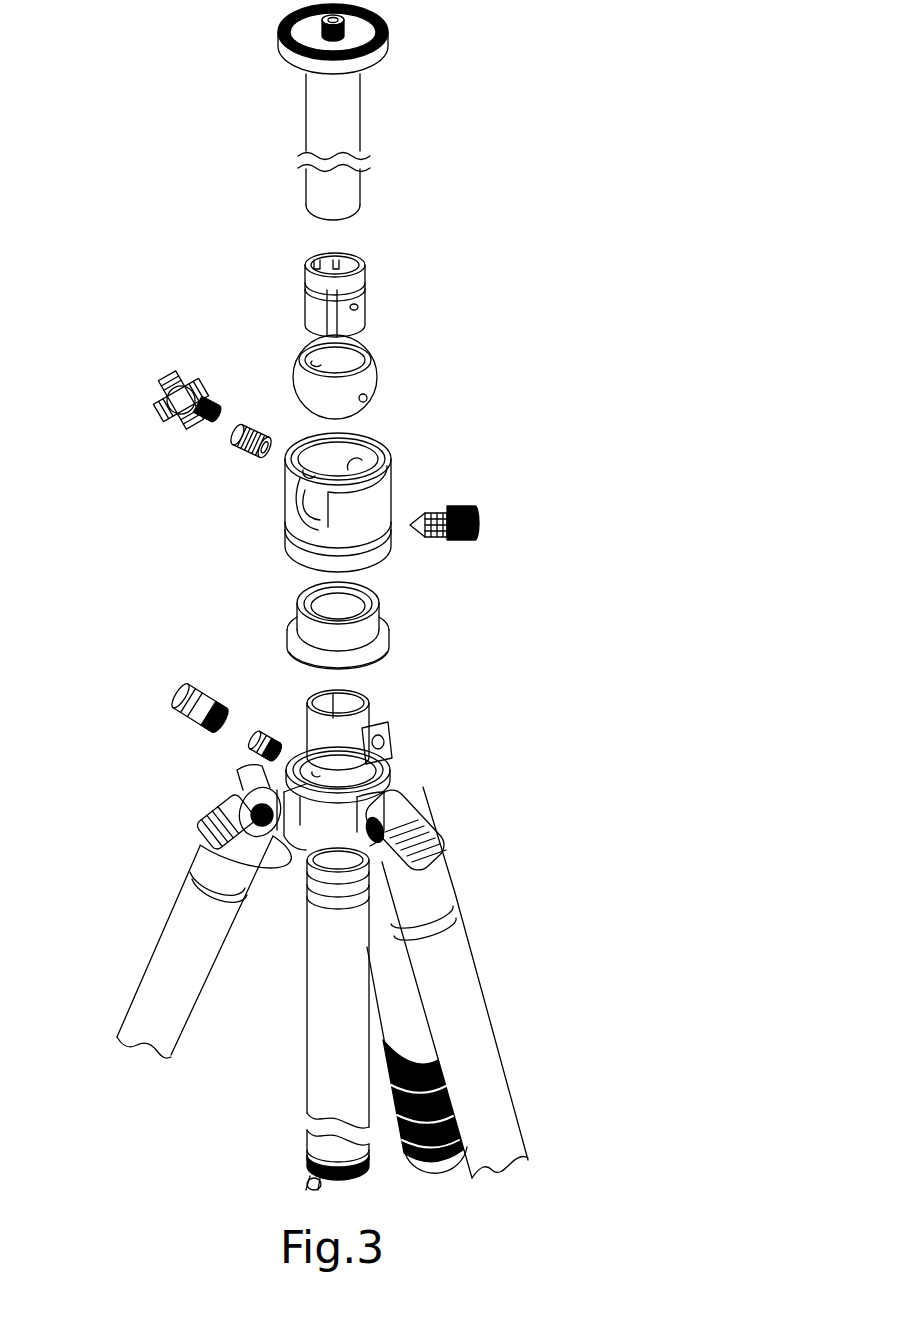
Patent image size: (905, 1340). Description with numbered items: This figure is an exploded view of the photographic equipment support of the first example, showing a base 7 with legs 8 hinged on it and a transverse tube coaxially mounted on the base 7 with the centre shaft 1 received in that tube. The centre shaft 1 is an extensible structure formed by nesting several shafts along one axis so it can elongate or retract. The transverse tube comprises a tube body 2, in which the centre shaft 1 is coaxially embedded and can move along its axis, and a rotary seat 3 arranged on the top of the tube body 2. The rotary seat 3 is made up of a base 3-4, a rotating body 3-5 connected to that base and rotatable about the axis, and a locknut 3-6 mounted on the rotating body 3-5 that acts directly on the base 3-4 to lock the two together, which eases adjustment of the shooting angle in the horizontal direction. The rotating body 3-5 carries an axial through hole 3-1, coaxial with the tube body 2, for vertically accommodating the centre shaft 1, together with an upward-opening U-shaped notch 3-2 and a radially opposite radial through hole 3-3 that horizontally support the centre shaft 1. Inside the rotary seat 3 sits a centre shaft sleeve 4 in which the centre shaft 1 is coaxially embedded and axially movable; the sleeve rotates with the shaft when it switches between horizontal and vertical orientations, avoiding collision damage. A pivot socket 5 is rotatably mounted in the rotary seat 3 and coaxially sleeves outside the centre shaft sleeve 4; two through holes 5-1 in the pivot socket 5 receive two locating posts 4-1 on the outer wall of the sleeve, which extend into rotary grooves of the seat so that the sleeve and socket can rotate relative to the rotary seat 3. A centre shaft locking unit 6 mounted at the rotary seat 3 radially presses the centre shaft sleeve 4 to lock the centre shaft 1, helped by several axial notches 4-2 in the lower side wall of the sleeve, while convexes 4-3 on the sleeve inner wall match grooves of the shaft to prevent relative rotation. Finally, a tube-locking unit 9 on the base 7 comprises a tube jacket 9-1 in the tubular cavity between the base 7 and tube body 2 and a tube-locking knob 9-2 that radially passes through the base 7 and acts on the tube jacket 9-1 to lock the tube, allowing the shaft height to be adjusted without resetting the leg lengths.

The centre shaft 1 is at (345, 148).
The tube body 2 is at (335, 978).
The rotary seat 3 is at (364, 539).
The axial through hole 3-1 is at (349, 493).
The U-shaped notch 3-2 is at (285, 510).
The radial through hole 3-3 is at (387, 447).
The base 3-4 is at (390, 657).
The rotating body 3-5 is at (373, 513).
The locknut 3-6 is at (480, 537).
The centre shaft sleeve 4 is at (357, 265).
The locating posts 4-1 is at (363, 310).
The notches 4-2 is at (323, 323).
The convexes 4-3 is at (308, 267).
The pivot socket 5 is at (337, 353).
The through holes 5-1 is at (300, 363).
The centre shaft locking unit 6 is at (232, 444).
The base 7 is at (398, 768).
The legs 8 is at (440, 948).
The tube-locking unit 9 is at (237, 691).
The tube jacket 9-1 is at (300, 717).
The tube-locking knob 9-2 is at (257, 740).